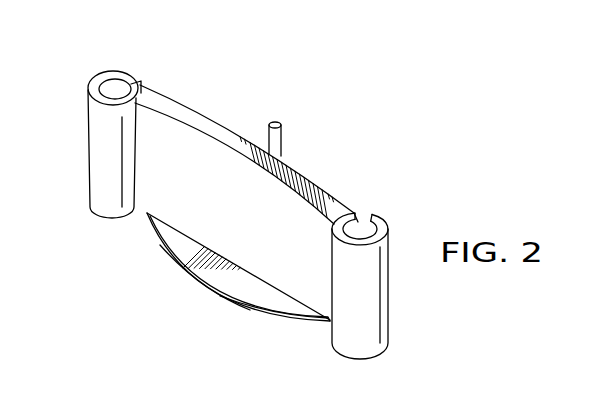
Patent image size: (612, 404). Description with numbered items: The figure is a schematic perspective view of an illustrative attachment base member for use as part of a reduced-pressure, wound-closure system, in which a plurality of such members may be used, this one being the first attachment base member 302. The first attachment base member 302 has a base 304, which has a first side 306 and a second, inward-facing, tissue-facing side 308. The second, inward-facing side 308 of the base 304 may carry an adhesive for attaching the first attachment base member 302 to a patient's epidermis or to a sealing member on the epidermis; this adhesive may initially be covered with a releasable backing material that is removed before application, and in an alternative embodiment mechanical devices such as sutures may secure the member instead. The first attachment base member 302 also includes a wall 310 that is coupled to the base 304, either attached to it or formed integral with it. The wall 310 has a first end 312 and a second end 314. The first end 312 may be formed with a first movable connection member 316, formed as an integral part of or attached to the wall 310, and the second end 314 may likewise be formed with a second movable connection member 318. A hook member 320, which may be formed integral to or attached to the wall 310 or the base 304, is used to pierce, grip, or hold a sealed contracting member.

The first attachment base member 302 is at (318, 58).
The base 304 is at (173, 237).
The first side 306 is at (247, 287).
The second, inward-facing side 308 is at (258, 313).
The wall 310 is at (211, 115).
The first end 312 is at (90, 150).
The second end 314 is at (388, 305).
The first movable connection member 316 is at (112, 71).
The second movable connection member 318 is at (409, 204).
The hook member 320 is at (284, 139).